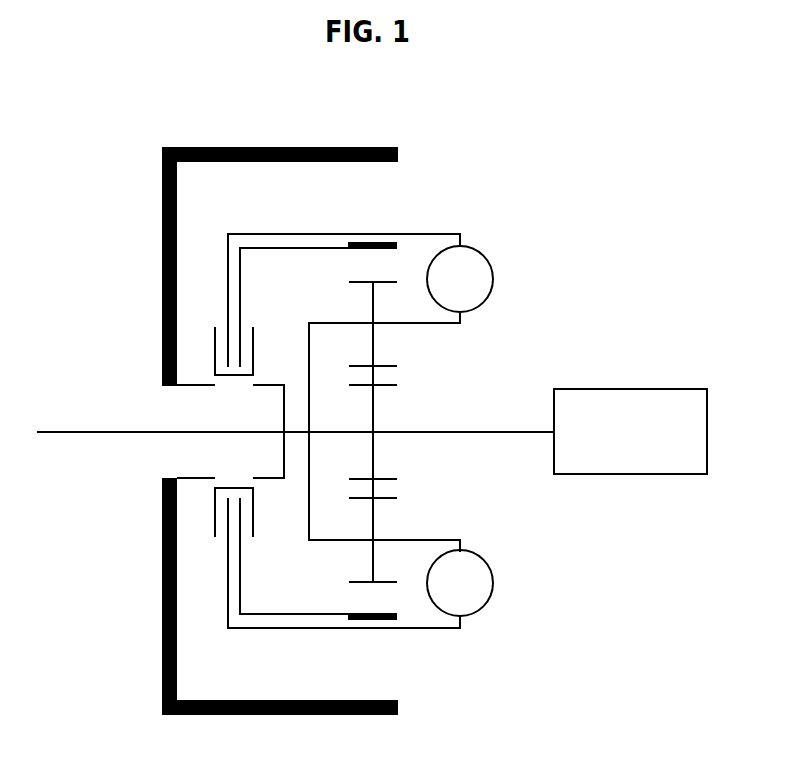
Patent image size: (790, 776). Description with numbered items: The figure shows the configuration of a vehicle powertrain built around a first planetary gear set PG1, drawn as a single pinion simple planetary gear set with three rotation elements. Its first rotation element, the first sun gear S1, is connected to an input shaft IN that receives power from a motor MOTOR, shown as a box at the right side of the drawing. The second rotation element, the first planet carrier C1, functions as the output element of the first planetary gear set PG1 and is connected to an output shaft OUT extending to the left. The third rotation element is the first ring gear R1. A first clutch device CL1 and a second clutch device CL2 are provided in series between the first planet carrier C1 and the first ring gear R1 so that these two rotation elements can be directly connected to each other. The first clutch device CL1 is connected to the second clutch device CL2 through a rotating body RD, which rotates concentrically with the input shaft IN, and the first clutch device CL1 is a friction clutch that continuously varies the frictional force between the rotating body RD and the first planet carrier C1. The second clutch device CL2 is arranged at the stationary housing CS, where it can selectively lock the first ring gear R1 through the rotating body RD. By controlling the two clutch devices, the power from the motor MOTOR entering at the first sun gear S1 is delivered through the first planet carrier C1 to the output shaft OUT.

The transmission housing / case CS is at (162, 688).
The output shaft OUT is at (87, 433).
The input shaft IN is at (493, 435).
The motor MOTOR is at (630, 431).
The rotating body RD is at (228, 281).
The first ring gear R1 is at (387, 240).
The second clutch device CL2 is at (190, 355).
The first planetary gear set PG1 is at (398, 654).
The first sun gear S1 is at (387, 386).
The first planet carrier C1 is at (418, 324).
The first clutch device CL1 is at (460, 431).